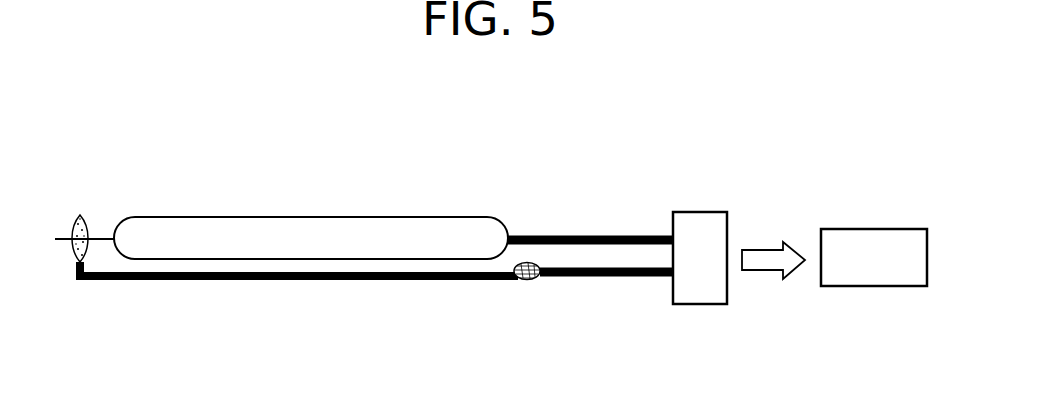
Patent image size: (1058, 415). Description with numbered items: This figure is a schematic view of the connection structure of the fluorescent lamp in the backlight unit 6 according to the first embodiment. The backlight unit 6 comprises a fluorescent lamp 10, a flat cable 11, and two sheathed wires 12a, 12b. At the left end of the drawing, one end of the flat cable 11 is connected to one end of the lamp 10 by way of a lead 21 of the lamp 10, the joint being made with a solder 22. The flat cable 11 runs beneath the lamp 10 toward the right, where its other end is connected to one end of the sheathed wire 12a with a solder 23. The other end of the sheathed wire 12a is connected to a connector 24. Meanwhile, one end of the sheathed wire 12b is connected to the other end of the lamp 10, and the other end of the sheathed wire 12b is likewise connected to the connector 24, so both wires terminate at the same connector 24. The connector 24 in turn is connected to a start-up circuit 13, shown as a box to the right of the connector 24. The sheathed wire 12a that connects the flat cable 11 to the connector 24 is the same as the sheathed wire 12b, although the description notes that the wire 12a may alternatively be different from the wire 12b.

The backlight unit 6 is at (493, 145).
The fluorescent lamp 10 is at (296, 228).
The flat cable 11 is at (305, 282).
The sheathed wire 12a is at (572, 282).
The sheathed wire 12b is at (572, 236).
The start-up circuit 13 is at (851, 237).
The lead 21 is at (99, 236).
The solder 22 is at (73, 256).
The solder 23 is at (527, 282).
The connector 24 is at (713, 290).